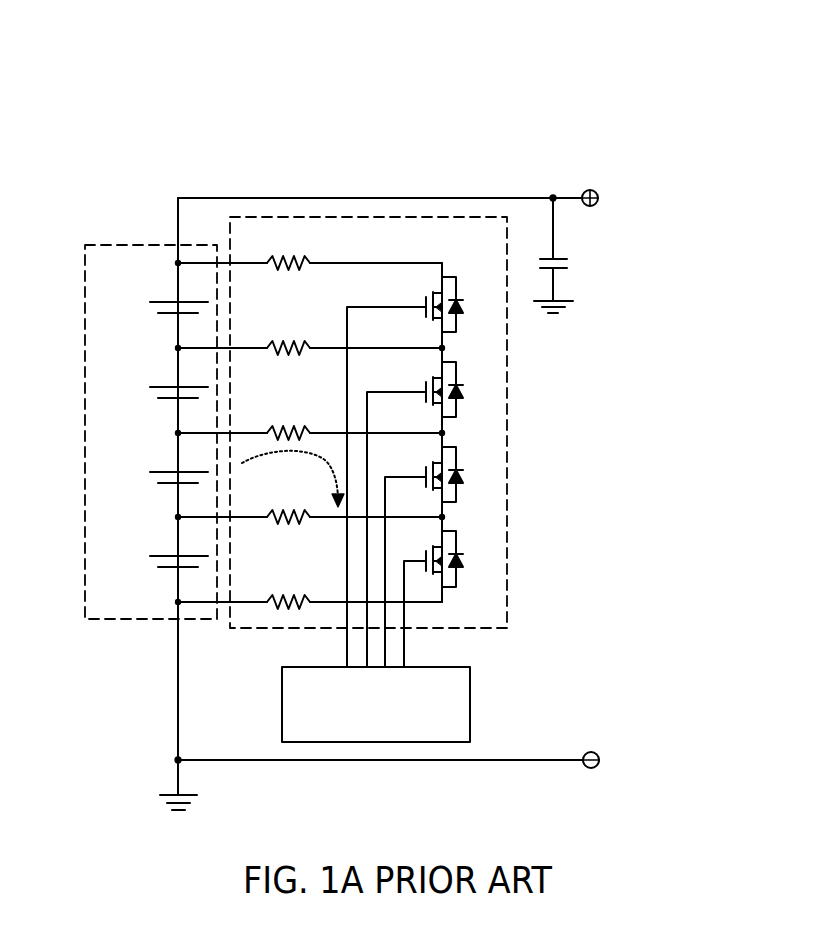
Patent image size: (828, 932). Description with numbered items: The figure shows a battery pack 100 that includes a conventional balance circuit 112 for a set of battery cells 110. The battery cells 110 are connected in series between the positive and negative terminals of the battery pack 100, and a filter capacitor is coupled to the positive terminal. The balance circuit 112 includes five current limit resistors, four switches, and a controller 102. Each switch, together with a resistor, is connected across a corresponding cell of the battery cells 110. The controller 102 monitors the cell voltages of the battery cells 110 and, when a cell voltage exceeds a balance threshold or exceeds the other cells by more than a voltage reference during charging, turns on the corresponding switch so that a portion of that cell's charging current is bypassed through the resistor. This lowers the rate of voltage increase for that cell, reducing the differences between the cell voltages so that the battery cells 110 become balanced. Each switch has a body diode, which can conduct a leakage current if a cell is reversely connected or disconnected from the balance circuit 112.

The battery pack 100 is at (137, 148).
The battery cells 110 is at (121, 245).
The balance circuit 112 is at (507, 425).
The controller 102 is at (470, 700).